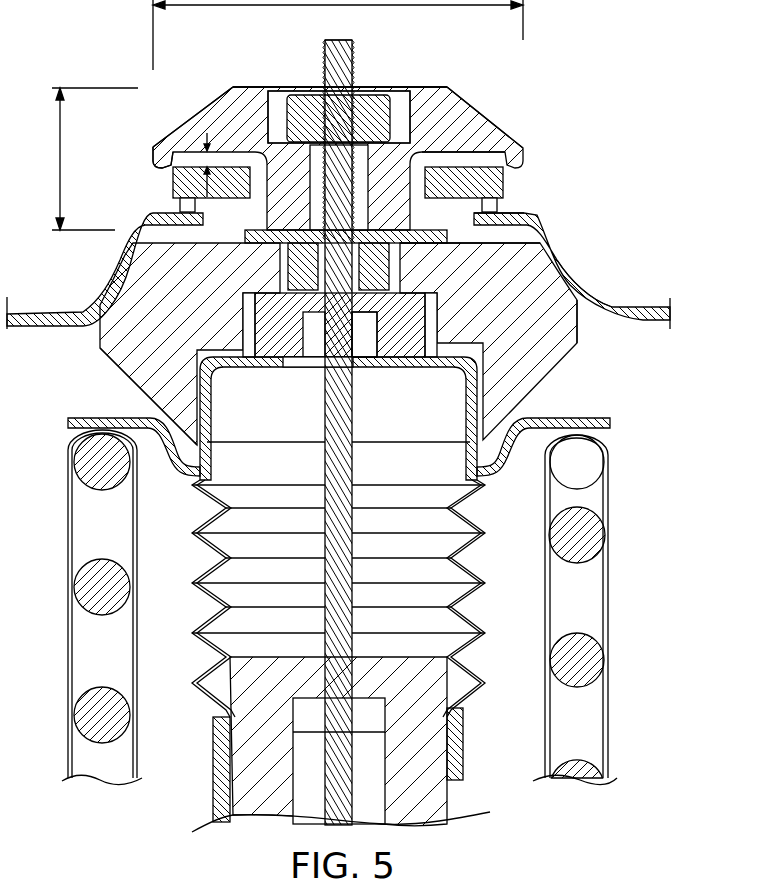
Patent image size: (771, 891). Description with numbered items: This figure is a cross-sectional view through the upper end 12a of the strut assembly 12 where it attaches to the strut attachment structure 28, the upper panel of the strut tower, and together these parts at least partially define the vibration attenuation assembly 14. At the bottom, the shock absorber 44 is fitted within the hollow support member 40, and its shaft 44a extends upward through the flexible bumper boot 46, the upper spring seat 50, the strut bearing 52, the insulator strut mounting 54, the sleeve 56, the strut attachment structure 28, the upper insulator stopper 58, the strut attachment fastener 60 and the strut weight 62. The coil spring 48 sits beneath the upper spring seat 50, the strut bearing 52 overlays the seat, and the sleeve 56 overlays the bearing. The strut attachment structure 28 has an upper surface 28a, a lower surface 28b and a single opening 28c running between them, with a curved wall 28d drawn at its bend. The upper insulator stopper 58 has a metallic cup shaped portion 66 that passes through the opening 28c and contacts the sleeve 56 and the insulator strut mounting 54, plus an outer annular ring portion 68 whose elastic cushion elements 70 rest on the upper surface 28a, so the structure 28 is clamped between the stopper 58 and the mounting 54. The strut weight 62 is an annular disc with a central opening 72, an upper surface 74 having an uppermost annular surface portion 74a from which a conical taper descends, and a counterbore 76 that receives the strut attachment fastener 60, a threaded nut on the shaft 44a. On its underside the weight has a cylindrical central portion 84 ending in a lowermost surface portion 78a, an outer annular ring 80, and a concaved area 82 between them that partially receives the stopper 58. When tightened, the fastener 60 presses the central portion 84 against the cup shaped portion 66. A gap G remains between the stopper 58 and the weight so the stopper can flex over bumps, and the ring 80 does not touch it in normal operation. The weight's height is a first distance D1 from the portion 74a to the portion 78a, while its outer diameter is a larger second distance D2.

The strut assembly 12 is at (617, 495).
The upper end of the strut assembly 12a is at (335, 72).
The vibration attenuation assembly 14 is at (505, 72).
The strut attachment structure 28 is at (643, 308).
The upper surface 28a is at (540, 222).
The lower surface 28b is at (575, 343).
The single opening 28c is at (470, 243).
The bracket curved wall 28d is at (572, 268).
The hollow support member 40 is at (217, 803).
The shock absorber 44 is at (263, 754).
The shaft 44a is at (347, 64).
The flexible bumper boot 46 is at (477, 547).
The coil spring 48 is at (97, 590).
The upper spring seat 50 is at (600, 424).
The strut bearing 52 is at (403, 323).
The insulator strut mounting 54 is at (513, 350).
The sleeve 56 is at (333, 293).
The upper insulator stopper 58 is at (485, 183).
The strut attachment fastener 60 is at (370, 118).
The strut weight 62 is at (470, 125).
The metallic cup shaped portion 66 is at (242, 232).
The outer annular ring portion 68 is at (234, 175).
The elastic cushion elements 70 is at (185, 204).
The central opening 72 is at (447, 100).
The upper surface 74 is at (202, 110).
The uppermost annular surface portion 74a is at (423, 100).
The counterbore 76 is at (268, 112).
The lowermost surface portion 78a is at (367, 315).
The outer annular ring 80 is at (160, 177).
The concaved area 82 is at (463, 157).
The central portion 84 is at (300, 243).
The gap G is at (205, 160).
The first distance D1 is at (87, 159).
The second distance D2 is at (338, 35).